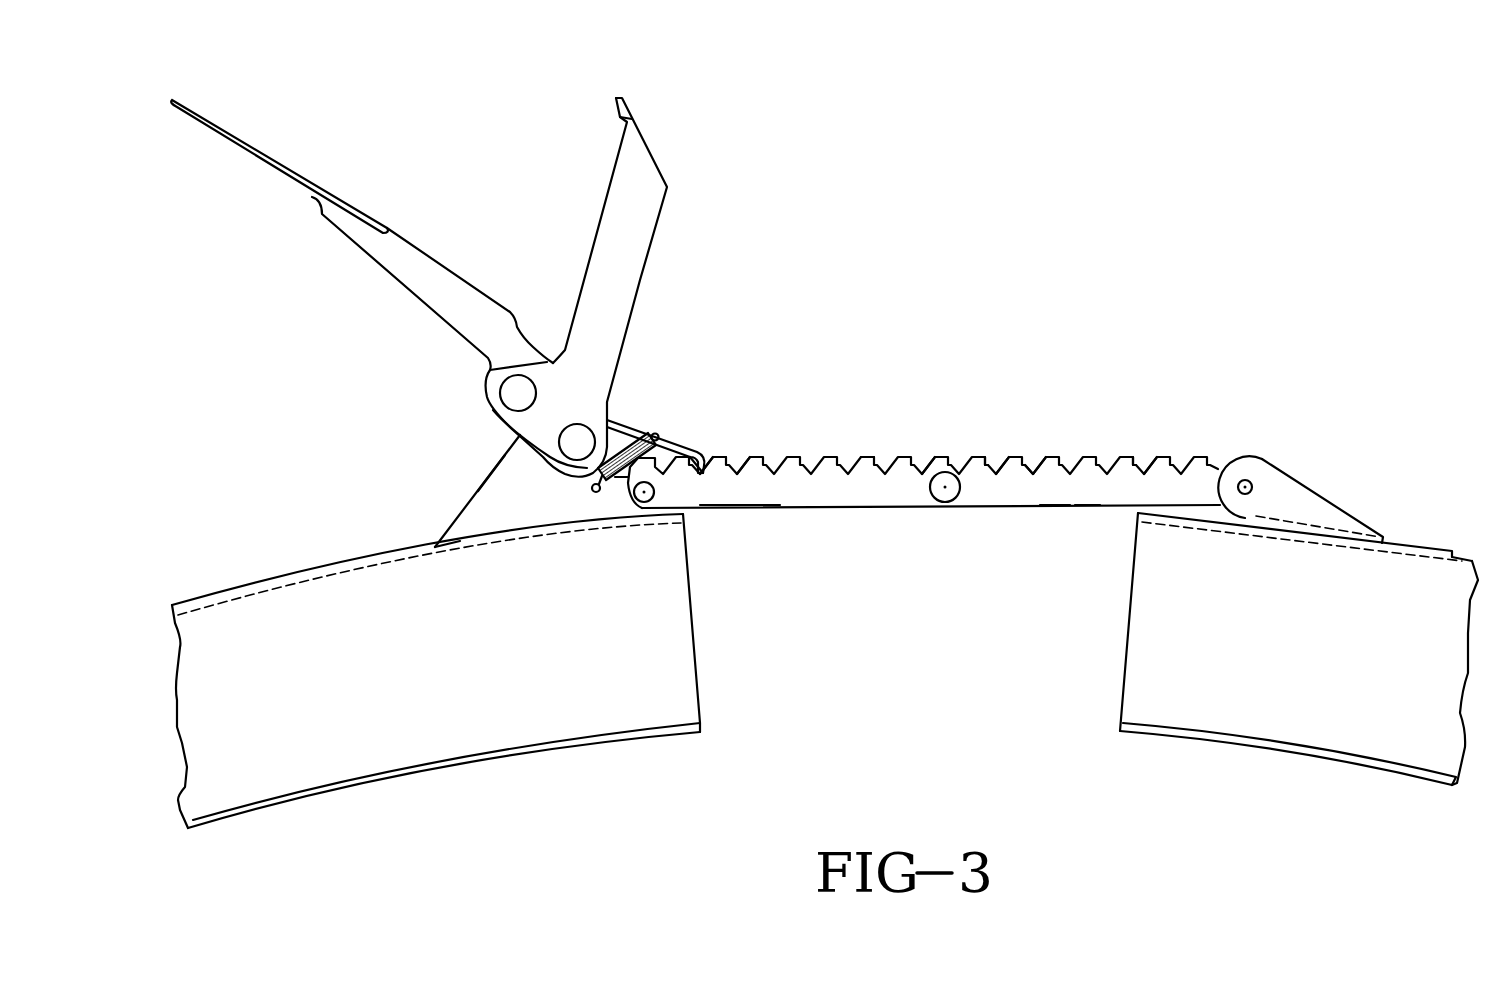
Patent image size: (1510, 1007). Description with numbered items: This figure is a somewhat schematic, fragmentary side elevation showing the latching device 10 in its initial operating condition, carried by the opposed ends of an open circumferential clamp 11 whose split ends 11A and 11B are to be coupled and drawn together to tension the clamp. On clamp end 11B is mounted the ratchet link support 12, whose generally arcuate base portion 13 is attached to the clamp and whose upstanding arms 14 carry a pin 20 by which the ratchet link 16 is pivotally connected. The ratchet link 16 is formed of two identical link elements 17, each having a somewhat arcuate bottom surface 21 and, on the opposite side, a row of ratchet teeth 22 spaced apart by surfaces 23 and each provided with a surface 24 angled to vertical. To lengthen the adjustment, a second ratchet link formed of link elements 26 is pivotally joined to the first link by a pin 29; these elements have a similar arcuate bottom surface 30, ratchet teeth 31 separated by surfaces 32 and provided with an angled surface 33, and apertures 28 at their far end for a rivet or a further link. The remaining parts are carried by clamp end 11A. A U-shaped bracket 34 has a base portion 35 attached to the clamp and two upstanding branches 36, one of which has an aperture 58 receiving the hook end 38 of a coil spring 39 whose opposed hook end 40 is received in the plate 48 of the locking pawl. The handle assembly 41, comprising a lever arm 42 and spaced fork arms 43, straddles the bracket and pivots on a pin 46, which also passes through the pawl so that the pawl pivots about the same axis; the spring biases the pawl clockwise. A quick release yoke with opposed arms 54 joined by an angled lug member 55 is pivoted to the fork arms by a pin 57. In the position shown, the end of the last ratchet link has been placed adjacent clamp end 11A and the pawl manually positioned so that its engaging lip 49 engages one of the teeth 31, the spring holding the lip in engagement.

The latching device 10 is at (457, 368).
The clamp 11 is at (481, 671).
The clamp end 11A is at (700, 685).
The clamp end 11B is at (1120, 682).
The ratchet link support 12 is at (1314, 473).
The base portion 13 is at (1420, 547).
The arms 14 is at (1332, 515).
The ratchet link 16 is at (925, 470).
The link elements 17 is at (1053, 483).
The pin 20 is at (1245, 485).
The bottom surface 21 is at (1082, 505).
The ratchet teeth 22 is at (988, 462).
The surfaces 23 is at (1030, 470).
The surface 24 is at (1145, 460).
The link elements 26 is at (924, 537).
The apertures 28 is at (652, 493).
The pin 29 is at (947, 490).
The bottom surface 30 is at (743, 510).
The ratchet teeth 31 is at (725, 460).
The surfaces 32 is at (800, 470).
The angled surface 33 is at (742, 460).
The bracket 34 is at (455, 482).
The base portion 35 is at (490, 533).
The branches 36 is at (445, 489).
The hook end 38 is at (620, 490).
The coil spring 39 is at (491, 376).
The hook end 40 is at (671, 385).
The handle assembly 41 is at (362, 235).
The lever arm 42 is at (245, 137).
The fork arms 43 is at (405, 272).
The pin 46 is at (577, 442).
The plate 48 is at (695, 460).
The engaging lip 49 is at (715, 460).
The arms 54 is at (622, 257).
The angled lug member 55 is at (652, 148).
The pin 57 is at (518, 393).
The aperture 58 is at (595, 492).